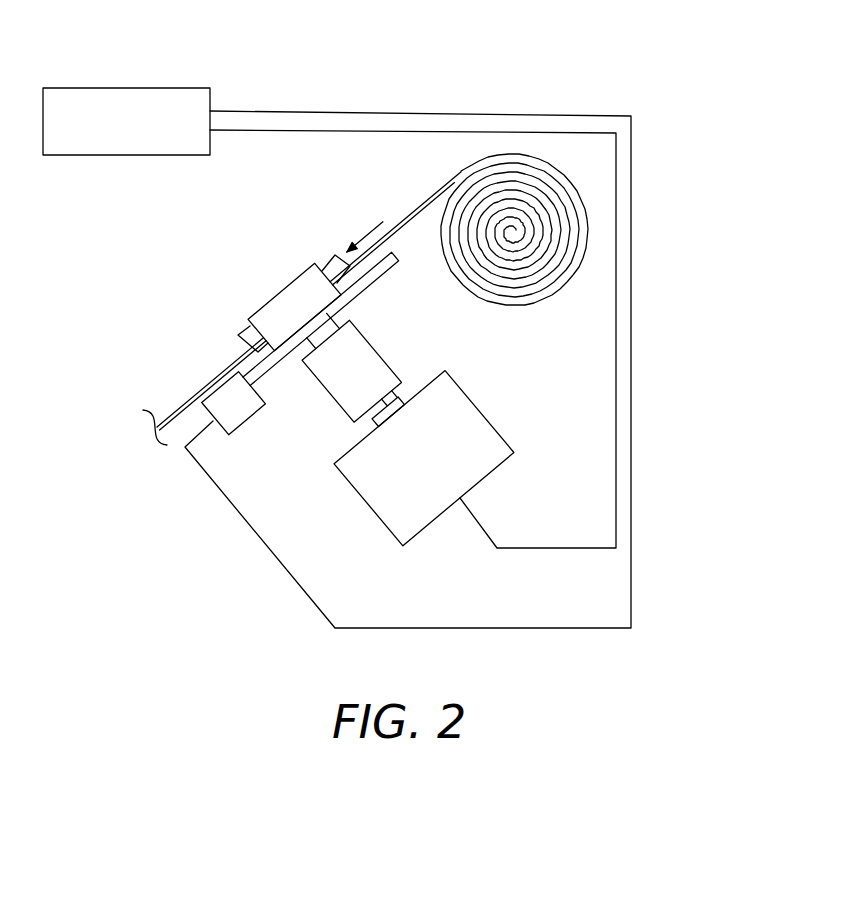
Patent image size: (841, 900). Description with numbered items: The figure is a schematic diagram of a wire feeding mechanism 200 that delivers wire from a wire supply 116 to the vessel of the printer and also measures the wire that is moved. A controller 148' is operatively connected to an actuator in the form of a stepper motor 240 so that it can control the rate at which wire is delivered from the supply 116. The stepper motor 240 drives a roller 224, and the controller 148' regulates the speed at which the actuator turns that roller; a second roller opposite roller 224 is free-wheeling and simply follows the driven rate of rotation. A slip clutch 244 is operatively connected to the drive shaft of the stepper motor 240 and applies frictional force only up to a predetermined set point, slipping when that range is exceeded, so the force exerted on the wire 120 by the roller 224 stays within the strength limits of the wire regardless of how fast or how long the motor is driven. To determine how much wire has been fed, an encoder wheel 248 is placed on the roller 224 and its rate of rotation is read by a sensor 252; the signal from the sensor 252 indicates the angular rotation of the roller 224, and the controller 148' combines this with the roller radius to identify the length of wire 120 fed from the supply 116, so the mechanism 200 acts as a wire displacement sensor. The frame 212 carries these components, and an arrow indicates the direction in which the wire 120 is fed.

The wire feeding mechanism 200 is at (372, 323).
The controller 148' is at (138, 99).
The wire supply 116 is at (590, 217).
The wire 120 is at (418, 205).
The roller 224 is at (283, 290).
The slip clutch 244 is at (388, 363).
The encoder wheel 248 is at (280, 362).
The sensor 252 is at (238, 428).
The stepper motor 240 is at (497, 430).
The housing frame 212 is at (337, 525).